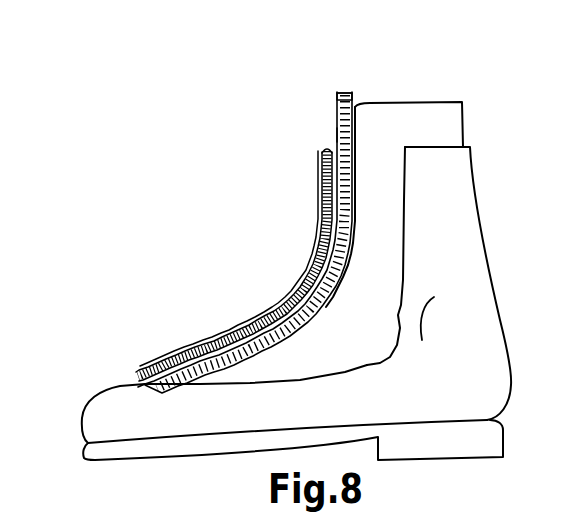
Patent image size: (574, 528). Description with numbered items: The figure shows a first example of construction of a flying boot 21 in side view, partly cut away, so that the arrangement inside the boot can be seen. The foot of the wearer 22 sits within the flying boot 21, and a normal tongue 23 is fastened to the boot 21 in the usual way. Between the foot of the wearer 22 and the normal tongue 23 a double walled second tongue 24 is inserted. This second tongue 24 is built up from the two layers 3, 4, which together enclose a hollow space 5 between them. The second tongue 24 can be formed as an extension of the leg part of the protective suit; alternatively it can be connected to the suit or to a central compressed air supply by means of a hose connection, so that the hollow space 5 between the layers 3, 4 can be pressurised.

The layer 3 is at (353, 97).
The layer 4 is at (337, 93).
The hollow space 5 is at (337, 135).
The flying boot 21 is at (480, 220).
The foot of the wearer 22 is at (360, 327).
The normal tongue 23 is at (310, 272).
The double walled second tongue 24 is at (320, 210).